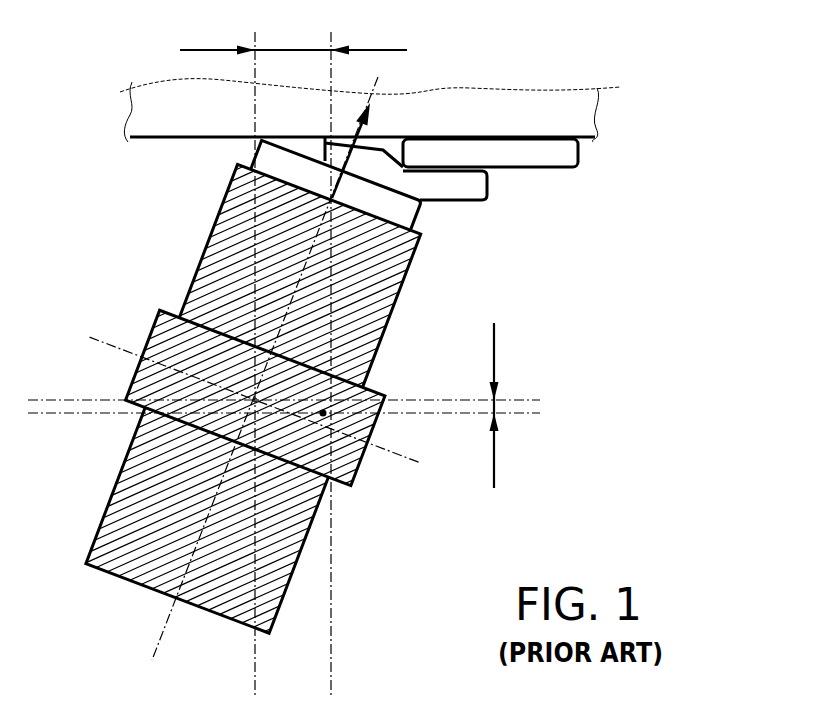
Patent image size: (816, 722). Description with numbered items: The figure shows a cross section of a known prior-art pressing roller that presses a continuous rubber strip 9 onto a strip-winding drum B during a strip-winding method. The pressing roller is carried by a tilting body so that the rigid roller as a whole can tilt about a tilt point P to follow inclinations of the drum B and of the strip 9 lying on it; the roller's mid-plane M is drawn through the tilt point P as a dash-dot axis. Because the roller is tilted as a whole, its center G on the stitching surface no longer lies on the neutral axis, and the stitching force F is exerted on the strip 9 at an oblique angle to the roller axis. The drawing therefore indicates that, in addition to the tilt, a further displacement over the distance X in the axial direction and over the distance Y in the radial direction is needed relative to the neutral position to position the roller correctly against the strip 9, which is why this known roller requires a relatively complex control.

The strip-winding drum B is at (493, 100).
The continuous strip 9 is at (525, 155).
The center of the circumferential member G is at (330, 196).
The stitching force F is at (361, 150).
The tilt point P is at (253, 397).
The mid-plane M is at (257, 386).
The displacement distance in X direction X is at (293, 36).
The displacement in Y direction Y is at (508, 404).